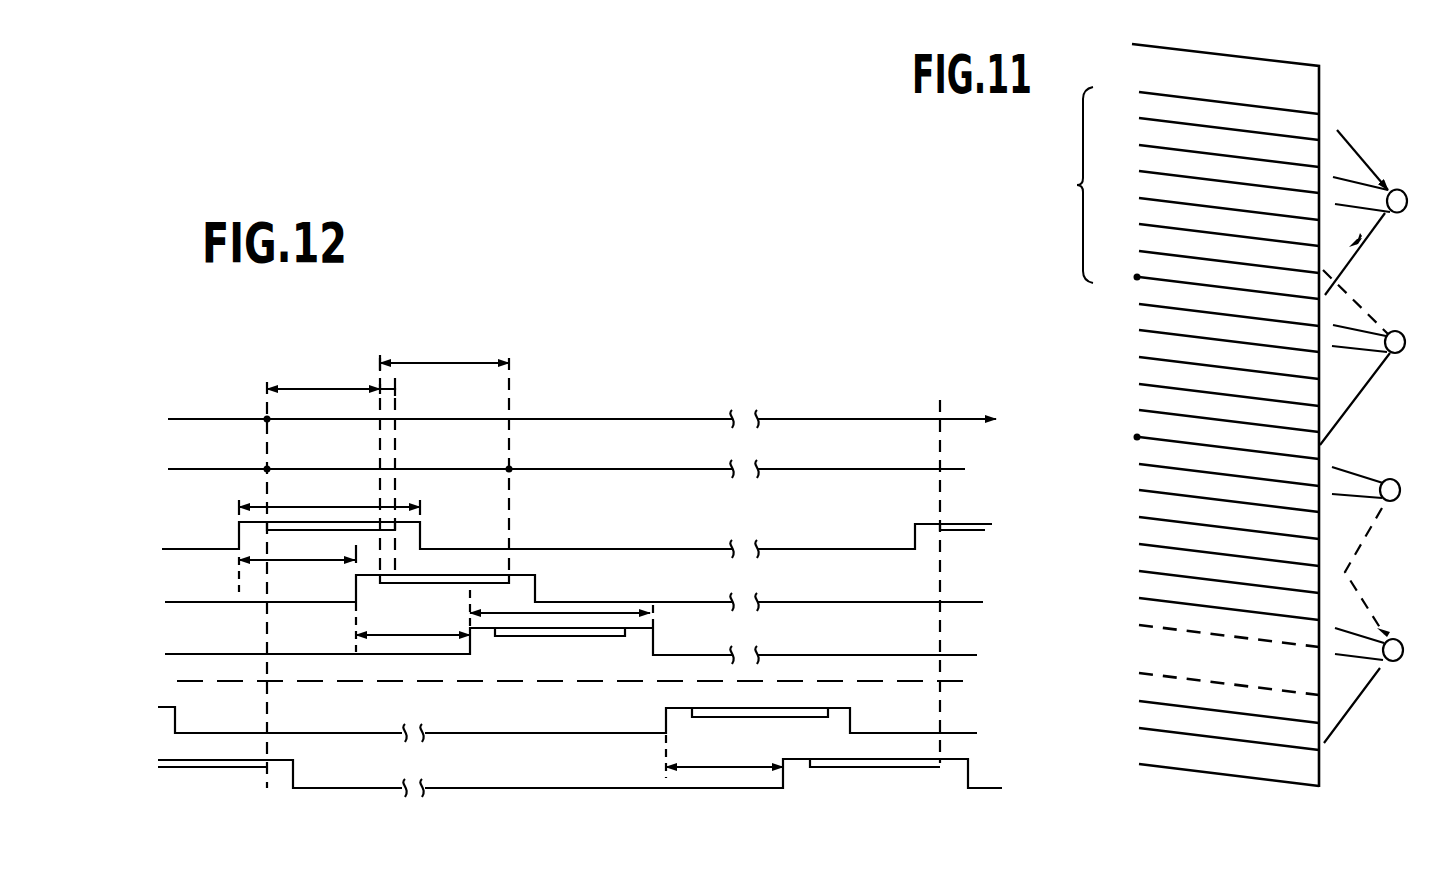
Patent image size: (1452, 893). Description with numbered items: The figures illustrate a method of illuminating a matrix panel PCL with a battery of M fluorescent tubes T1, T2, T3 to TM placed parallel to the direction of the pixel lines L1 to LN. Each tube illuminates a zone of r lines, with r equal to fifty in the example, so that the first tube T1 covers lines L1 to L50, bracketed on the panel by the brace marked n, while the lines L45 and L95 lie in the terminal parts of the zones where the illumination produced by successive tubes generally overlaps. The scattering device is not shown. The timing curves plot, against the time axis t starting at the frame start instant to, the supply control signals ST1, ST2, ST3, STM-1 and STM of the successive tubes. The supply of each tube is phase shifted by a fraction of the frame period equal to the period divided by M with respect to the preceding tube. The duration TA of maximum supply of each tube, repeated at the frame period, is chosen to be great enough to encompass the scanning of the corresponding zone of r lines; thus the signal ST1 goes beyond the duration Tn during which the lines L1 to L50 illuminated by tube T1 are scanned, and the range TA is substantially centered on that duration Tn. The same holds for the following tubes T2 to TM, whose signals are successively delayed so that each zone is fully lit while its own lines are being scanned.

In FIG. 11, the photoconductor / print carrier line PCL is at (1320, 78).
In FIG. 11, the number of lines per group n is at (1068, 185).
In FIG. 11, the first line of pixels L1 is at (1208, 91).
In FIG. 12, the first line of pixels L1 is at (268, 468).
In FIG. 11, the line 45 L45 is at (1204, 249).
In FIG. 12, the line 45 L45 is at (376, 469).
In FIG. 11, the fiftieth line of pixels L50 is at (1204, 274).
In FIG. 12, the fiftieth line of pixels L50 is at (412, 460).
In FIG. 11, the line 95 L95 is at (1199, 441).
In FIG. 12, the line 95 L95 is at (538, 466).
In FIG. 11, the last line of pixels LN is at (1203, 743).
In FIG. 12, the last line of pixels LN is at (936, 469).
In FIG. 11, the first fluorescent tube T1 is at (1405, 192).
In FIG. 11, the second fluorescent tube T2 is at (1404, 335).
In FIG. 11, the third fluorescent tube T3 is at (1399, 483).
In FIG. 11, the M-th fluorescent tube TM is at (1403, 650).
In FIG. 12, the time axis t is at (582, 409).
In FIG. 12, the frame start time to is at (253, 585).
In FIG. 12, the zone scanning duration Tn is at (388, 367).
In FIG. 12, the maximum supply duration TA is at (446, 556).
In FIG. 12, the first tube supply control signal ST1 is at (549, 542).
In FIG. 12, the second tube supply control signal ST2 is at (545, 595).
In FIG. 12, the third tube supply control signal ST3 is at (542, 647).
In FIG. 12, the (M-1)-th tube supply control signal STM-1 is at (539, 725).
In FIG. 12, the M-th tube supply control signal STM is at (552, 778).